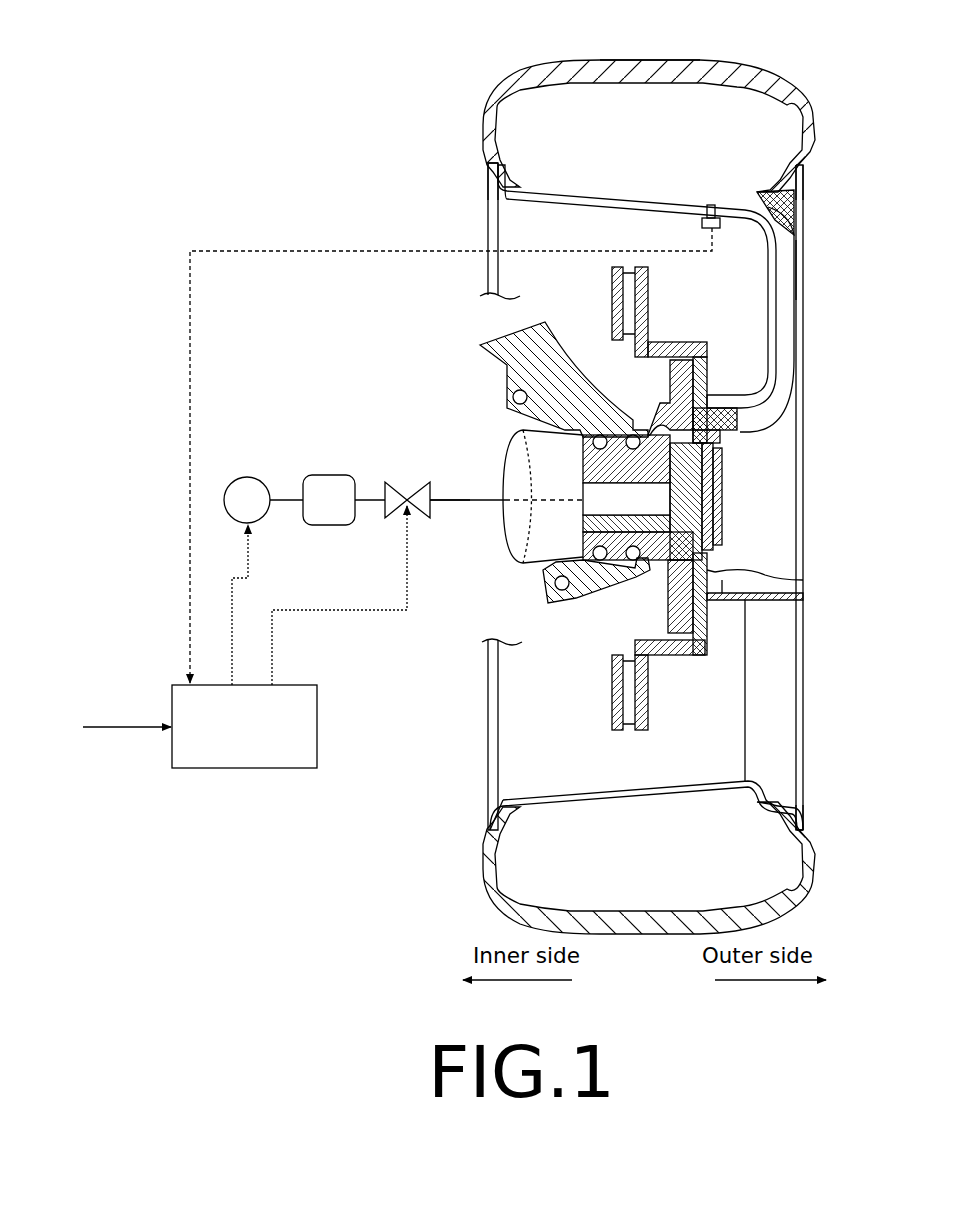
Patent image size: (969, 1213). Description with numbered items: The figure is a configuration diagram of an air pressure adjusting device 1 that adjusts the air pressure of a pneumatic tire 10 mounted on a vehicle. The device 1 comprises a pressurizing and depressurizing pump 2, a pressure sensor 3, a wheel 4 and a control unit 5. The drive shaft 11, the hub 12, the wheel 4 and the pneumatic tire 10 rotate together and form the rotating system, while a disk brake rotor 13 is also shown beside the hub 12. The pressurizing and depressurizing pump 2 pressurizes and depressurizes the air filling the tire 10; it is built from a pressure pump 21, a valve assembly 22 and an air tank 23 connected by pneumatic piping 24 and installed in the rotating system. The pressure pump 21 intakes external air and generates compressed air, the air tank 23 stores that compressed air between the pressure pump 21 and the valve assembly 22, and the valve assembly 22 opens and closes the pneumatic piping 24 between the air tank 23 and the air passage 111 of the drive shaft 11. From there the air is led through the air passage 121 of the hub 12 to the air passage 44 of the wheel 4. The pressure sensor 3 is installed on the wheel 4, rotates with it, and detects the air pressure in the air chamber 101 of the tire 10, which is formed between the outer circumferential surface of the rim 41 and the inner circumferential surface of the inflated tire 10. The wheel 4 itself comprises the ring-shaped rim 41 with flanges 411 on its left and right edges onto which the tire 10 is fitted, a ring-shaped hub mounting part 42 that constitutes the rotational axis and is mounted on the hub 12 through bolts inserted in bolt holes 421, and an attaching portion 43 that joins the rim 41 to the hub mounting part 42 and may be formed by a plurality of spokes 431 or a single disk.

The air pressure adjusting device 1 is at (385, 184).
The pressurizing and depressurizing pump 2 is at (226, 445).
The pressure sensor 3 is at (707, 202).
The wheel 4 is at (822, 226).
The control unit 5 is at (172, 685).
The pneumatic tire 10 is at (776, 72).
The air chamber 101 is at (708, 98).
The vehicle drive shaft 11 is at (640, 500).
The air passage 111 is at (707, 530).
The hub 12 is at (668, 392).
The air passage 121 is at (717, 463).
The disk brake rotor 13 is at (601, 305).
The pressure pump 21 is at (250, 477).
The valve assembly 22 is at (407, 482).
The air tank 23 is at (330, 475).
The pneumatic piping 24 is at (287, 498).
The rim 41 is at (634, 200).
The flanges 411 is at (485, 173).
The hub mounting part 42 is at (715, 395).
The bolt holes 421 is at (728, 602).
The attaching portion 43 is at (801, 308).
The spokes 431 is at (798, 277).
The air passage 44 is at (782, 363).